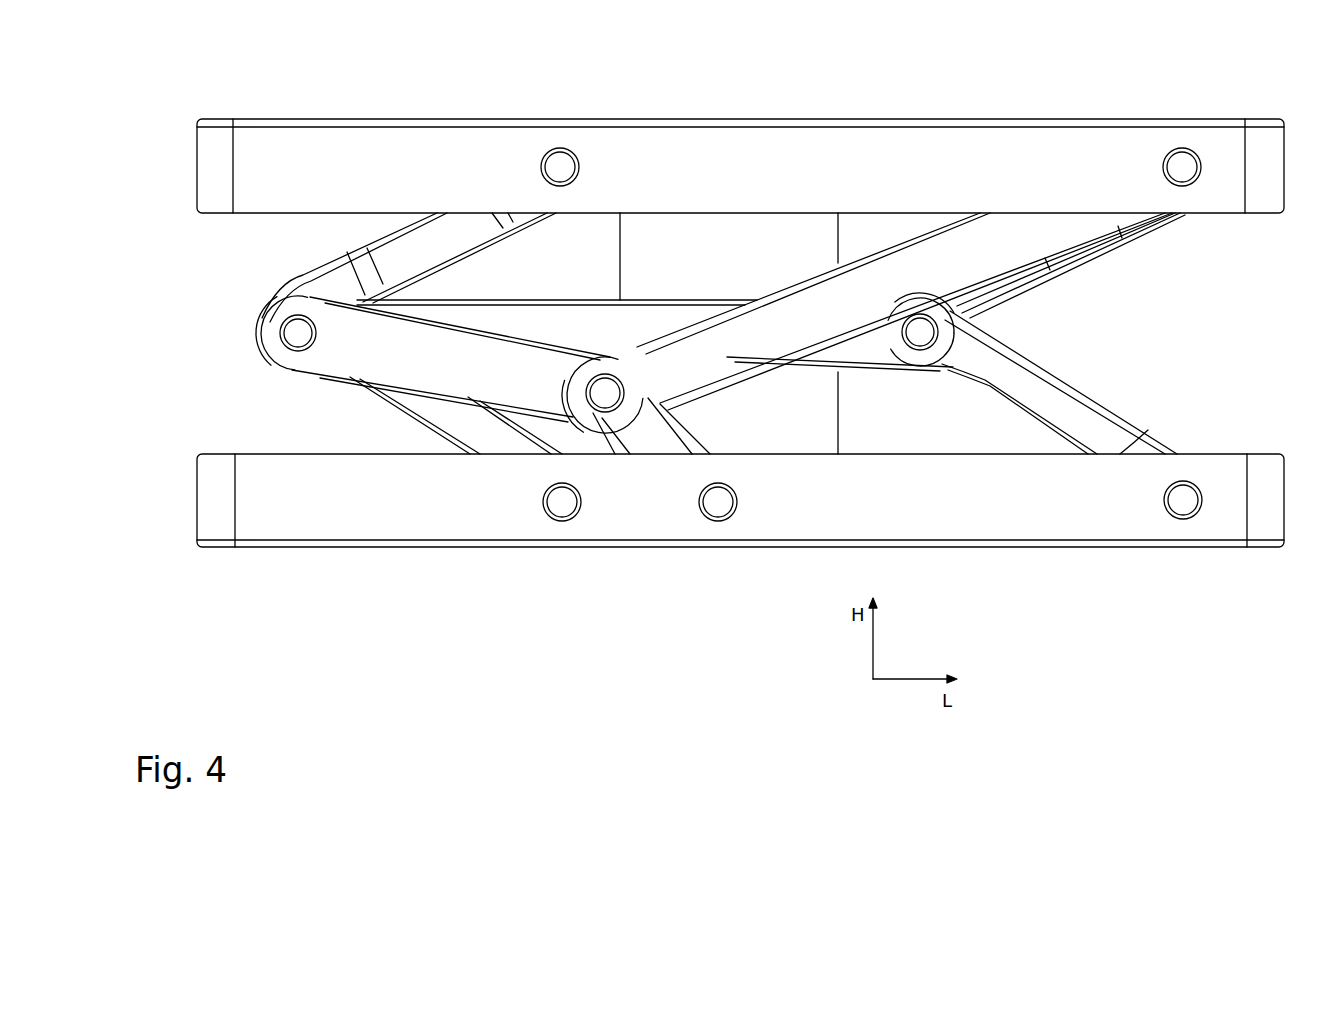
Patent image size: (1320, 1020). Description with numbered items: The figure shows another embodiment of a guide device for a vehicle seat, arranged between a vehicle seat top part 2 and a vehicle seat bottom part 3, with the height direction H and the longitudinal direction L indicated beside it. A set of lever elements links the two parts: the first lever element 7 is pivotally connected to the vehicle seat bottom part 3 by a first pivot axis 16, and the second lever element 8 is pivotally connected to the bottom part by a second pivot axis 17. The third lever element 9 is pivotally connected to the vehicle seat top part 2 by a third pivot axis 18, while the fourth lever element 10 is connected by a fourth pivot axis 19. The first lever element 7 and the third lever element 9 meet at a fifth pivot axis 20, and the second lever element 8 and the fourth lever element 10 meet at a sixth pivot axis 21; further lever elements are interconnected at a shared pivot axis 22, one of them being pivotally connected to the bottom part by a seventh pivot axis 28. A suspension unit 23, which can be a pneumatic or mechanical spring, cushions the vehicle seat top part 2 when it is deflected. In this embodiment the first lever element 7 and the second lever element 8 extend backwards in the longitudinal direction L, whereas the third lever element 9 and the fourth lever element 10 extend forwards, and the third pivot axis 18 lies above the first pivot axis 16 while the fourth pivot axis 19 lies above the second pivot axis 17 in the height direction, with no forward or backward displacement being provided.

The vehicle seat top part 2 is at (1002, 148).
The vehicle seat bottom part 3 is at (1120, 530).
The first lever element 7 is at (437, 417).
The second lever element 8 is at (1047, 390).
The third lever element 9 is at (426, 237).
The fourth lever element 10 is at (1093, 247).
The first pivot axis 16 is at (563, 507).
The second pivot axis 17 is at (1182, 505).
The third pivot axis 18 is at (560, 165).
The fourth pivot axis 19 is at (1178, 163).
The fifth pivot axis 20 is at (293, 335).
The sixth pivot axis 21 is at (965, 318).
The shared pivot axis 22 is at (607, 387).
The suspension unit 23 is at (732, 226).
The seventh pivot axis 28 is at (718, 505).